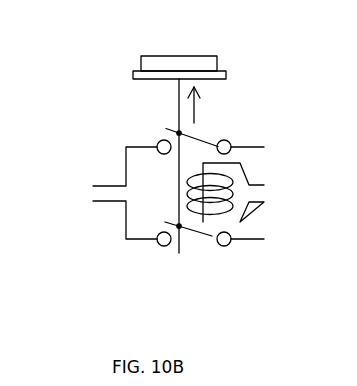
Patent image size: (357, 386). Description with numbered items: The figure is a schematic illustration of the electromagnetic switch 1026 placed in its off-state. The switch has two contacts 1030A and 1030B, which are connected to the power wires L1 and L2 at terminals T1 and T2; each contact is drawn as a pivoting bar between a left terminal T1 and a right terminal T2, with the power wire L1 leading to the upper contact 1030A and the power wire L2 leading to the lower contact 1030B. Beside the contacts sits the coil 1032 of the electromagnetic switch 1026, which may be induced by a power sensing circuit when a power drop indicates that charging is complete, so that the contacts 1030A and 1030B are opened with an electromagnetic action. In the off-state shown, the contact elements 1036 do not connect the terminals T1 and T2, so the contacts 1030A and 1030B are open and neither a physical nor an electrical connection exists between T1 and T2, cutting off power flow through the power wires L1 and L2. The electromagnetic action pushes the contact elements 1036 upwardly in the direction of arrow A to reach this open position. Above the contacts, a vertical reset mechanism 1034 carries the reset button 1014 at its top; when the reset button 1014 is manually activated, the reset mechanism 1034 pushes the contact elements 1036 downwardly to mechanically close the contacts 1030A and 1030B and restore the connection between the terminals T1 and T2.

The reset button 1014 is at (157, 56).
The electromagnetic switch 1026 is at (94, 78).
The contact 1030A is at (166, 122).
The contact 1030B is at (190, 254).
The coil 1032 is at (245, 177).
The reset mechanism 1034 is at (178, 97).
The contact elements 1036 is at (267, 183).
The terminal T1 is at (158, 143).
The terminal T2 is at (226, 139).
The power wire L1 is at (110, 185).
The power wire L2 is at (102, 202).
The arrow A is at (194, 110).